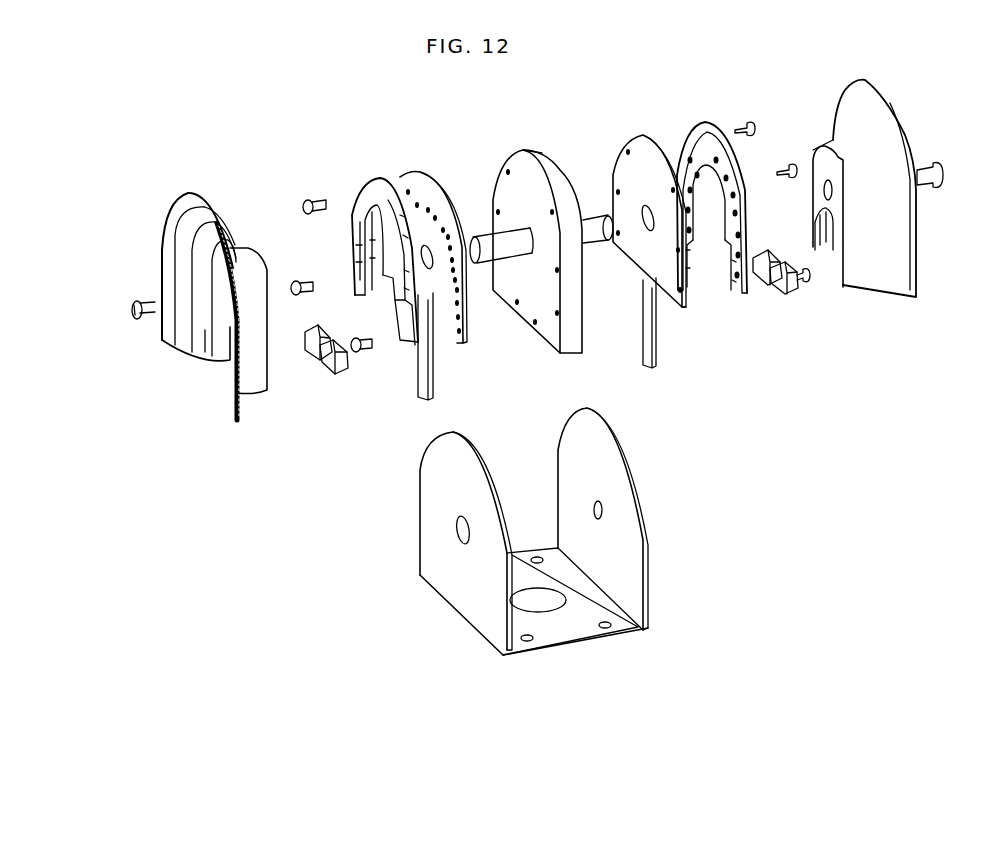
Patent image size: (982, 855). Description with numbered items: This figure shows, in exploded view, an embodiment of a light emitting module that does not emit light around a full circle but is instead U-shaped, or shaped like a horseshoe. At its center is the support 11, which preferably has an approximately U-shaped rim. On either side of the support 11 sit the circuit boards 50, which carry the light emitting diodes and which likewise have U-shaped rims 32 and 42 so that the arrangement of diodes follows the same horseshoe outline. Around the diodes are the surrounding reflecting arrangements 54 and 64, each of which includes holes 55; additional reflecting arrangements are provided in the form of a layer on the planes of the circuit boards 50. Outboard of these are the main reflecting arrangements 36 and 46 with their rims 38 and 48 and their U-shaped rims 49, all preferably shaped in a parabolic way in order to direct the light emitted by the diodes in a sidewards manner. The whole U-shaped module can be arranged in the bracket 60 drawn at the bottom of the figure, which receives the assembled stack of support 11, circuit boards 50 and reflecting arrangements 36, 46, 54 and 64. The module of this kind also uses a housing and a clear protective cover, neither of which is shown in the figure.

The support 11 is at (536, 160).
The U-shaped rim 32 is at (686, 290).
The main reflecting arrangement 36 is at (877, 120).
The rim 38 is at (866, 288).
The U-shaped rim 42 is at (441, 193).
The main reflecting arrangement 46 is at (186, 215).
The rim 48 is at (190, 350).
The U-shaped rim 49 is at (203, 213).
The circuit board 50 is at (626, 165).
The surrounding reflecting arrangement 54 is at (735, 205).
The hole 55 is at (356, 226).
The bracket 60 is at (450, 580).
The surrounding reflecting arrangement 64 is at (376, 190).